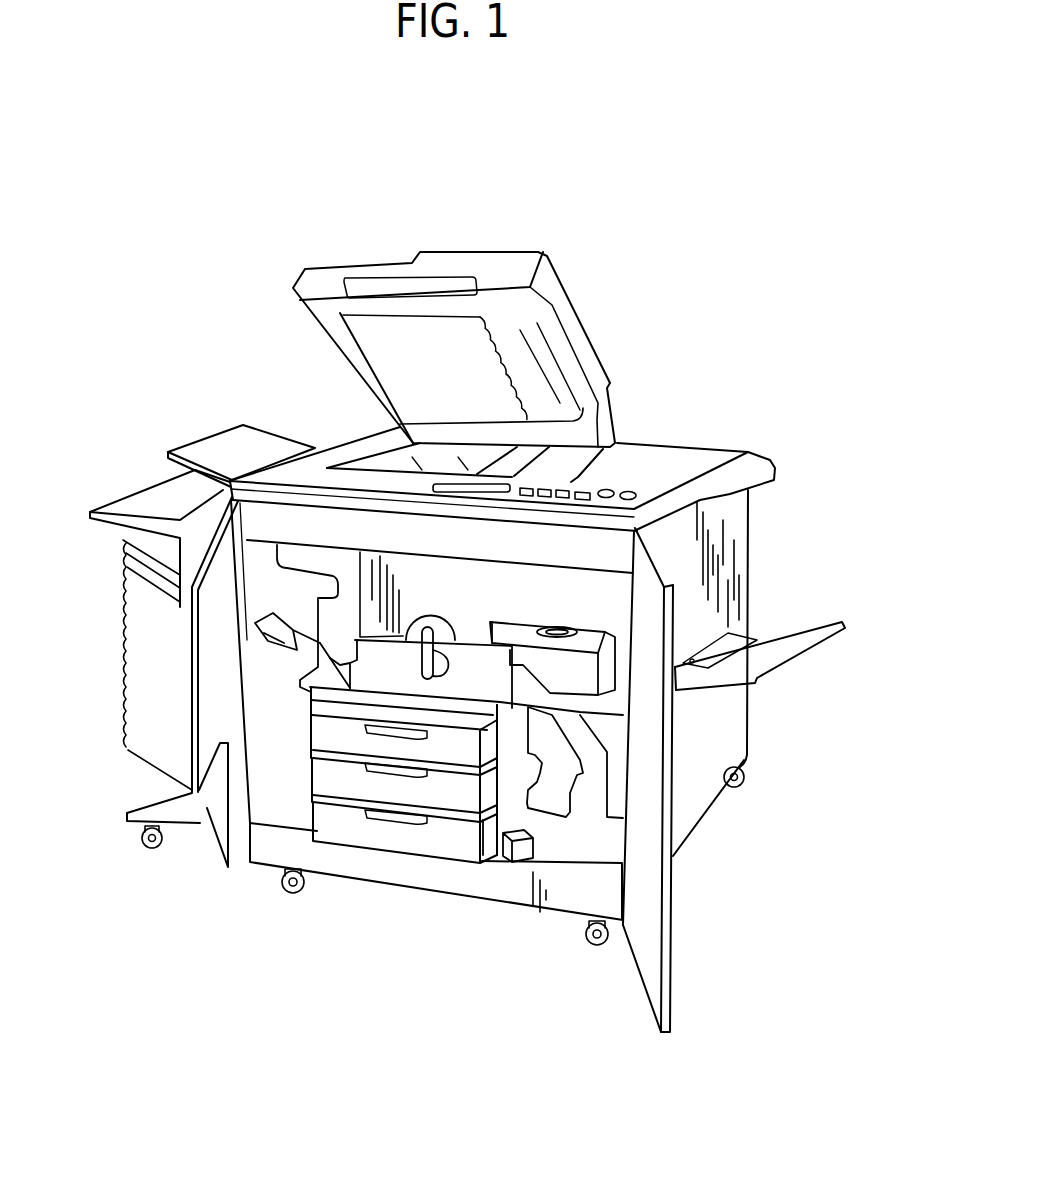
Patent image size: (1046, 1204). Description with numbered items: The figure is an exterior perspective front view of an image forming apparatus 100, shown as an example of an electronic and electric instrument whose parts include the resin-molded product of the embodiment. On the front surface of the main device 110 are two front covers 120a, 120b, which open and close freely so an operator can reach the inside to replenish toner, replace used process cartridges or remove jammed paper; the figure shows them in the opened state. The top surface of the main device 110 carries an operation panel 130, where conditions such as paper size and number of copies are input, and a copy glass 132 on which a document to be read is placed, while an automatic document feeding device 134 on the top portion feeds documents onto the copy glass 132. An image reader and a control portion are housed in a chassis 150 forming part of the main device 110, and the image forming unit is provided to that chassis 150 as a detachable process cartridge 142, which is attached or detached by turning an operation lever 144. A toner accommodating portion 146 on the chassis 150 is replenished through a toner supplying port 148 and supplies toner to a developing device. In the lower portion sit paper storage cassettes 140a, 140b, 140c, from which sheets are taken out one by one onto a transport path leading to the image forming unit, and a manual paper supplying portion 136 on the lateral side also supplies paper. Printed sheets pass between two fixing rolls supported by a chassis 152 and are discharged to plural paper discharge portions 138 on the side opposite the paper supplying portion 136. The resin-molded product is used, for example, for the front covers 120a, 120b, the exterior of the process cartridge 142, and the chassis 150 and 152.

The image forming apparatus 100 is at (734, 196).
The main device 110 is at (750, 517).
The front cover 120a is at (217, 821).
The front cover 120b is at (673, 973).
The operation panel 130 is at (573, 487).
The copy glass 132 is at (383, 462).
The automatic document feeding device 134 is at (548, 287).
The manual paper supplying portion 136 is at (817, 621).
The paper discharge portion 138 is at (126, 610).
The paper storage cassette 140a is at (337, 736).
The paper storage cassette 140b is at (400, 794).
The paper storage cassette 140c is at (420, 843).
The process cartridge 142 is at (503, 693).
The operation lever 144 is at (428, 638).
The toner accommodating portion 146 is at (577, 677).
The toner supplying port 148 is at (603, 647).
The chassis 150 is at (607, 600).
The chassis 152 is at (270, 707).